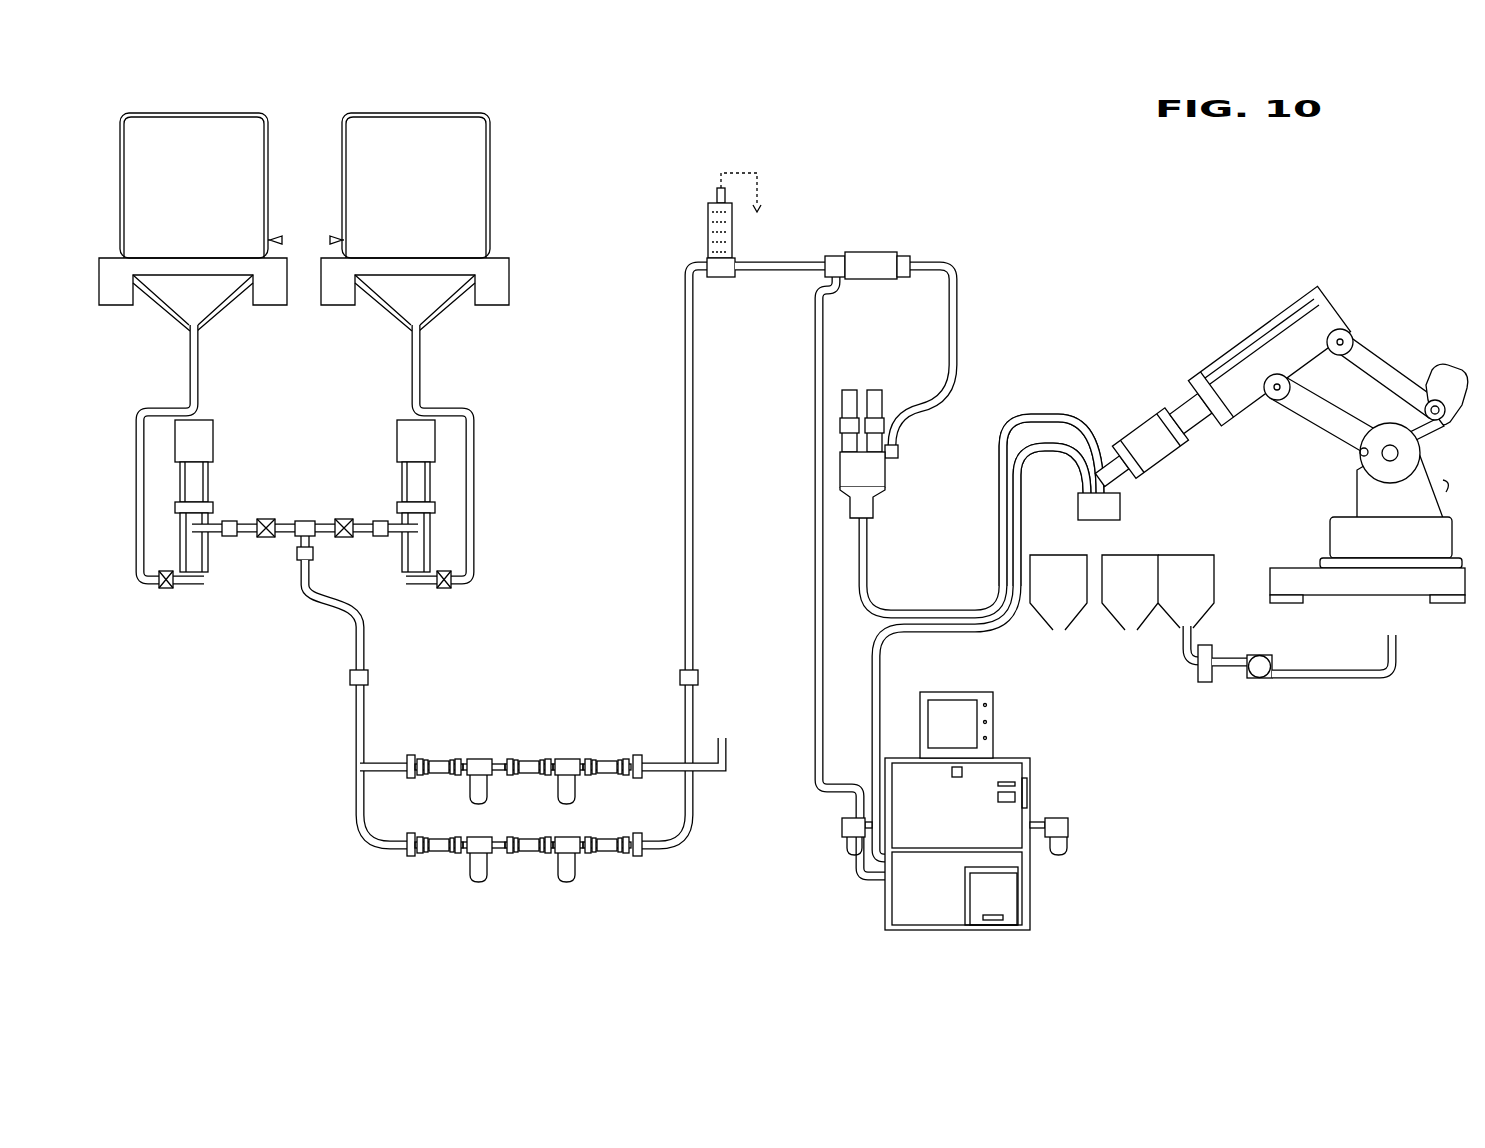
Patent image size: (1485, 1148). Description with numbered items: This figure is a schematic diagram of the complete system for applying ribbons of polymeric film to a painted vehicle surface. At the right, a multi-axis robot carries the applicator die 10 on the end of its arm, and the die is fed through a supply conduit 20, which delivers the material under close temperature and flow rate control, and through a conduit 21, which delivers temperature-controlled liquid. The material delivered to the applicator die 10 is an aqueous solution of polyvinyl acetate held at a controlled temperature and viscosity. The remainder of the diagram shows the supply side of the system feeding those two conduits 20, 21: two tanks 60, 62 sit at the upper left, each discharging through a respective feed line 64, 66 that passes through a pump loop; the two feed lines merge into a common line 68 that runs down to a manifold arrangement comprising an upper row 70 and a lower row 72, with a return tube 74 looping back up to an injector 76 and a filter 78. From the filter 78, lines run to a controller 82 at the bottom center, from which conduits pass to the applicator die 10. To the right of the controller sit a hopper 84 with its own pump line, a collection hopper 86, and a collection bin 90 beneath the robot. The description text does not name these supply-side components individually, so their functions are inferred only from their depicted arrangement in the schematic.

The applicator die 10 is at (1115, 532).
The supply conduit 20 is at (1044, 413).
The conduit 21 is at (985, 614).
The first supply tank 60 is at (268, 138).
The second supply tank 62 is at (490, 138).
The first feed line with pump 64 is at (190, 368).
The second feed line with pump 66 is at (420, 368).
The mixing line 68 is at (352, 628).
The nozzle manifold 70 is at (553, 762).
The return manifold line 72 is at (662, 850).
The return tube 74 is at (693, 455).
The syringe injector 76 is at (708, 227).
The filter 78 is at (868, 282).
The controller 82 is at (885, 890).
The hopper with pump line 84 is at (1218, 580).
The collection hopper 86 is at (1105, 615).
The collection bin 90 is at (1037, 612).